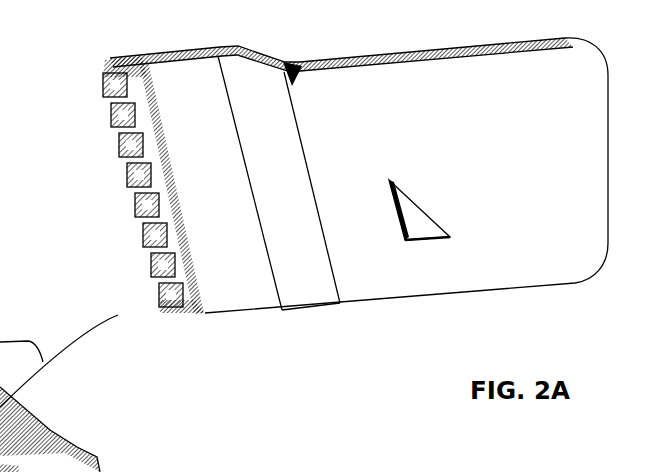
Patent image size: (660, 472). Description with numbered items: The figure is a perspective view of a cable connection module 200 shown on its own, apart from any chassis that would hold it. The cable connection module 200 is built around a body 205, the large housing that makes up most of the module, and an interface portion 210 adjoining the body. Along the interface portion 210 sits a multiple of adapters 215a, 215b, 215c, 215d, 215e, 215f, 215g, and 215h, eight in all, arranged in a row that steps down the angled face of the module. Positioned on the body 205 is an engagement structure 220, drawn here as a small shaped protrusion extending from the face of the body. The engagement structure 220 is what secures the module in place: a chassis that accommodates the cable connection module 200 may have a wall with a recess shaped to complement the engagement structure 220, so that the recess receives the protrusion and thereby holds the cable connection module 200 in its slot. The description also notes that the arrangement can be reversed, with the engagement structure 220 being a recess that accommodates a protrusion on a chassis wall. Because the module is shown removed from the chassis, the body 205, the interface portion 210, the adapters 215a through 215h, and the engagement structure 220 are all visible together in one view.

The cable connection module 200 is at (447, 17).
The body 205 is at (573, 127).
The interface portion 210 is at (257, 300).
The adapter 215a is at (134, 92).
The adapter 215b is at (141, 121).
The adapter 215c is at (150, 150).
The adapter 215d is at (161, 182).
The adapter 215e is at (177, 240).
The adapter 215f is at (184, 272).
The adapter 215g is at (183, 303).
The adapter 215h is at (196, 306).
The engagement structure 220 is at (420, 225).